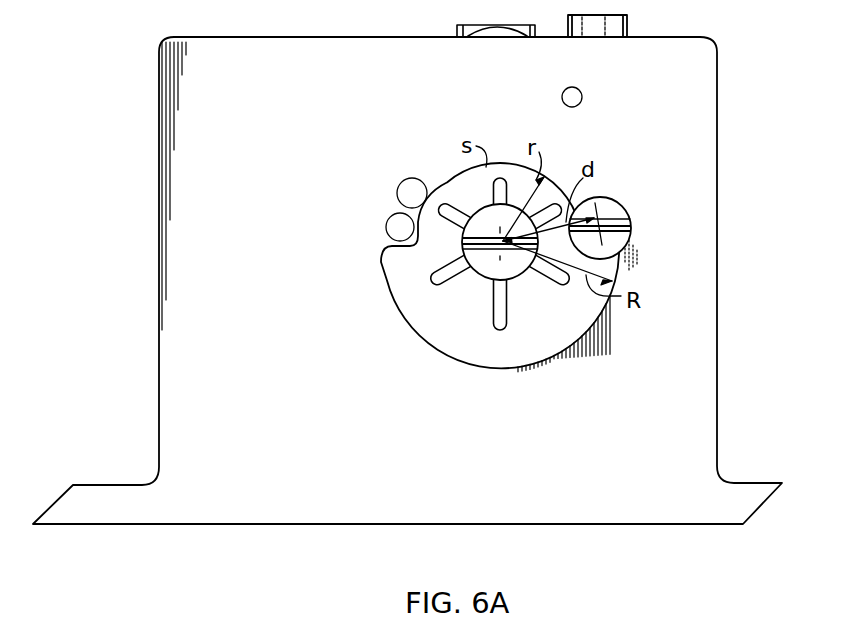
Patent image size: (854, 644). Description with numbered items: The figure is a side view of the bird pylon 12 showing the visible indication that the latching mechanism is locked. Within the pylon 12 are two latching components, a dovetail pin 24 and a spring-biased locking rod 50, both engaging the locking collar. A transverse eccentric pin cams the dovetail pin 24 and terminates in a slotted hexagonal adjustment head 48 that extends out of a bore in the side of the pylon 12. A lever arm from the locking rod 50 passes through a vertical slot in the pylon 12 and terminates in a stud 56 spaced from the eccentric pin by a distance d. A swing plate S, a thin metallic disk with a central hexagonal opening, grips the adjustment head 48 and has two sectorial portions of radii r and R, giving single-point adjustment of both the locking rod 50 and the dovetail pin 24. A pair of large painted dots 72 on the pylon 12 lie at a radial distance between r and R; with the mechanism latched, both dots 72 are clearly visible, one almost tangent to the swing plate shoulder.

The pylon 12 is at (318, 44).
The dovetail pin 24 is at (456, 26).
The locking rod 50 is at (628, 20).
The adjustment head 48 is at (485, 272).
The stud 56 is at (622, 212).
The painted dots 72 is at (386, 222).